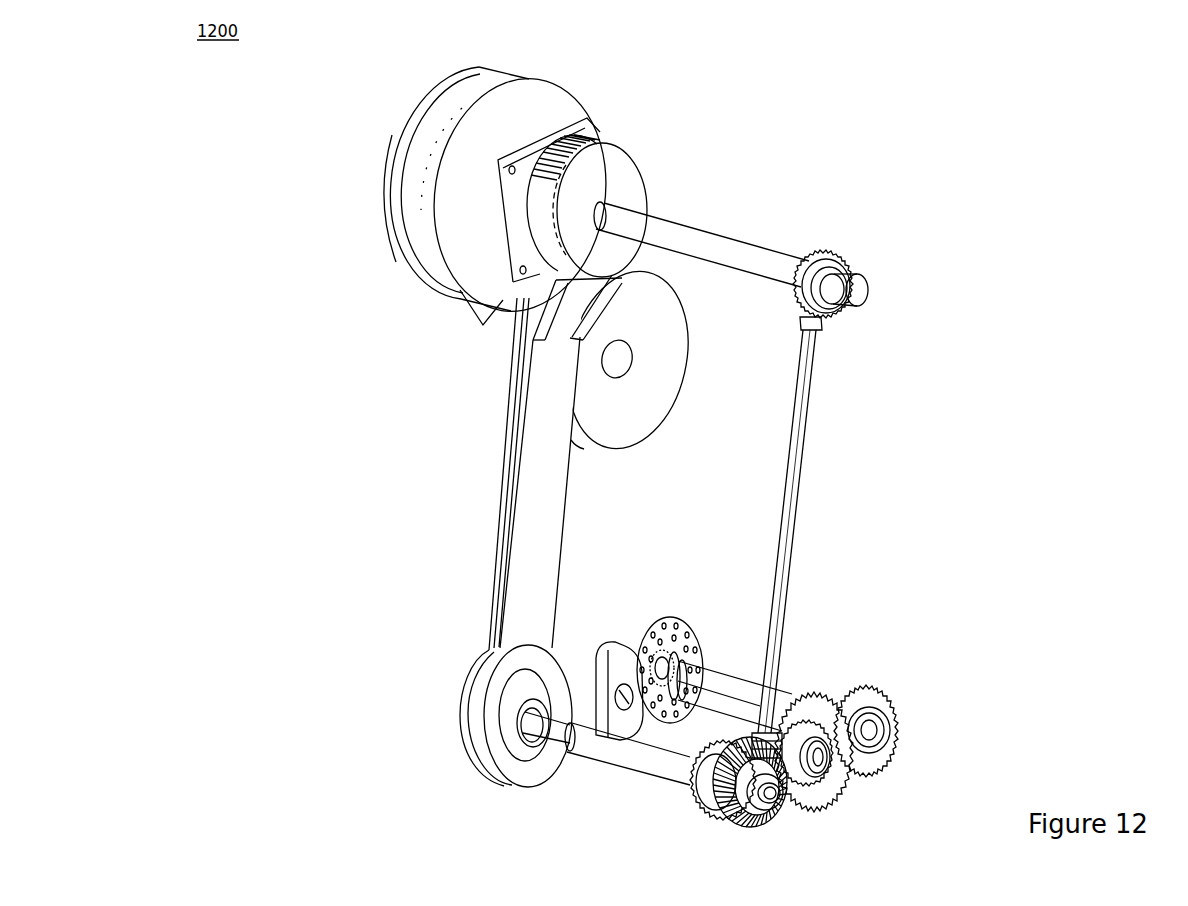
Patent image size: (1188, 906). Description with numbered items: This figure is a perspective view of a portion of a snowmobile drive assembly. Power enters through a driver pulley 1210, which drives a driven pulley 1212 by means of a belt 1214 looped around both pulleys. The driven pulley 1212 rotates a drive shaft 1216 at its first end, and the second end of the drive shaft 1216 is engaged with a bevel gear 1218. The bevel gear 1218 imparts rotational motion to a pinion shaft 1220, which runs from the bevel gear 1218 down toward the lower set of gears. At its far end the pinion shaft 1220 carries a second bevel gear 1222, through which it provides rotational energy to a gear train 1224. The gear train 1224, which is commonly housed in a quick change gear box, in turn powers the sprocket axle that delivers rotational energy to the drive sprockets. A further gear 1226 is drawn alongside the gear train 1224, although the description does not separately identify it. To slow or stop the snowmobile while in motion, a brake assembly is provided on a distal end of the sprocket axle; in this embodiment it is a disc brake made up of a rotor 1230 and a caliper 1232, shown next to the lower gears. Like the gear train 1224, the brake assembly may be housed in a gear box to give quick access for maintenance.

The driver pulley 1210 is at (662, 362).
The driven pulley 1212 is at (398, 217).
The belt 1214 is at (493, 327).
The drive shaft 1216 is at (735, 248).
The bevel gear 1218 is at (843, 314).
The pinion shaft 1220 is at (783, 548).
The second bevel gear 1222 is at (730, 820).
The gear train 1224 is at (837, 805).
The gear 1226 is at (878, 730).
The rotor 1230 is at (672, 627).
The caliper 1232 is at (622, 668).